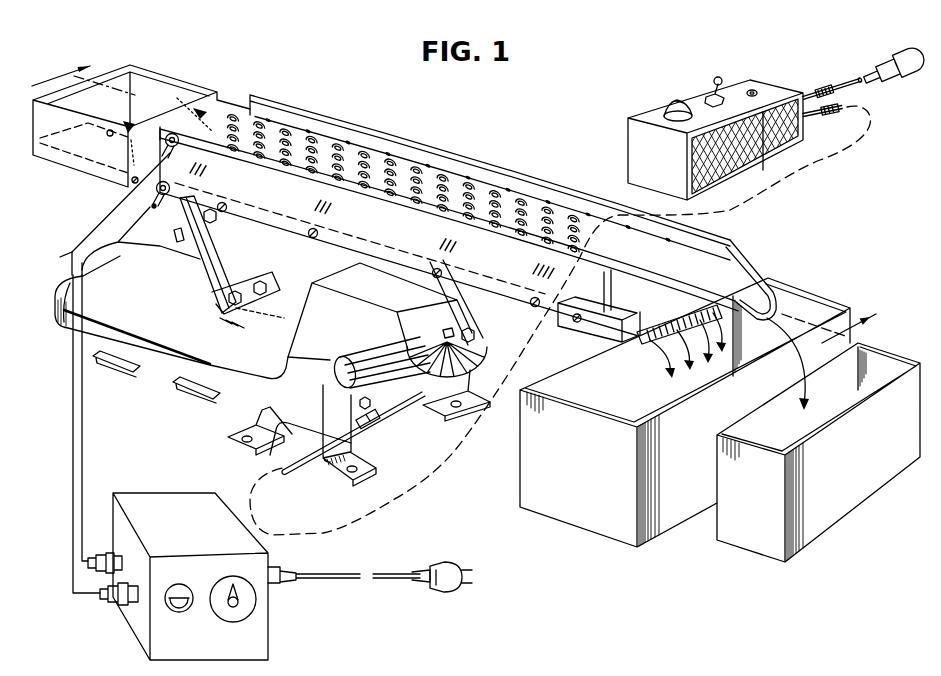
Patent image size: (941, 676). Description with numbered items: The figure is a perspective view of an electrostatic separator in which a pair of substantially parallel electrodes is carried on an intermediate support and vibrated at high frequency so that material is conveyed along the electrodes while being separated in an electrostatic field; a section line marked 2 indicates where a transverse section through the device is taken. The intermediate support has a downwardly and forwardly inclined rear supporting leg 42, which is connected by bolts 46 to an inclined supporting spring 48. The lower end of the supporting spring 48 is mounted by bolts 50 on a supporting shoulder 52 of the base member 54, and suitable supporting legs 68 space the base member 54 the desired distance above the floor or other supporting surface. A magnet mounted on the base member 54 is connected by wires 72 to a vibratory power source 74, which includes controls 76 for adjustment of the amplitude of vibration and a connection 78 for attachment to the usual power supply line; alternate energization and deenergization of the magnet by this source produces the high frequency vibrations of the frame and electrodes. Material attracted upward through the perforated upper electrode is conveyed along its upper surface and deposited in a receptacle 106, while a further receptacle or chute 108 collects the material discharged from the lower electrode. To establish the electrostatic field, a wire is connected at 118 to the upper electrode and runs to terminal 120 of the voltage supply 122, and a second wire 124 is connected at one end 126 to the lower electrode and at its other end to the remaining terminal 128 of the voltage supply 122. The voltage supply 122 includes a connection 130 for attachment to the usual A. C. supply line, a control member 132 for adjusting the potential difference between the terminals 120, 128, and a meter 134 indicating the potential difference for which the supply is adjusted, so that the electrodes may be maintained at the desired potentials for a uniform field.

The section line 2- 2 is at (453, 202).
The rear supporting leg 42 is at (176, 208).
The bolts 46 is at (176, 234).
The inclined supporting spring 48 is at (226, 264).
The bolts 50 is at (242, 300).
The supporting shoulder 52 is at (212, 300).
The base member 54 is at (183, 355).
The supporting legs 68 is at (233, 434).
The wires 72 is at (425, 483).
The vibratory power source 74 is at (750, 138).
The controls 76 is at (712, 97).
The connection 78 is at (884, 62).
The receptacle 106 is at (750, 543).
The receptacle or chute 108 is at (543, 503).
The connection 118 is at (174, 147).
The terminal 120 is at (110, 599).
The voltage supply 122 is at (262, 646).
The second wire 124 is at (72, 256).
The connection end 126 is at (157, 188).
The terminal 128 is at (93, 557).
The connection 130 is at (455, 590).
The control member 132 is at (240, 612).
The meter 134 is at (181, 613).